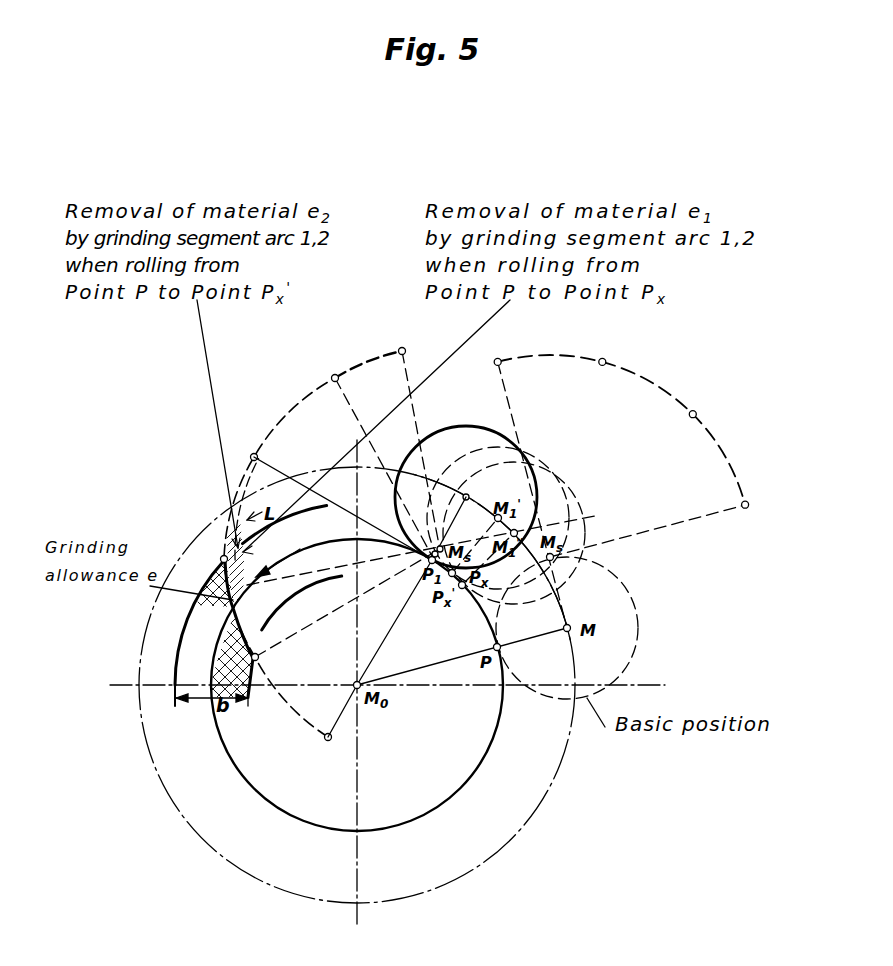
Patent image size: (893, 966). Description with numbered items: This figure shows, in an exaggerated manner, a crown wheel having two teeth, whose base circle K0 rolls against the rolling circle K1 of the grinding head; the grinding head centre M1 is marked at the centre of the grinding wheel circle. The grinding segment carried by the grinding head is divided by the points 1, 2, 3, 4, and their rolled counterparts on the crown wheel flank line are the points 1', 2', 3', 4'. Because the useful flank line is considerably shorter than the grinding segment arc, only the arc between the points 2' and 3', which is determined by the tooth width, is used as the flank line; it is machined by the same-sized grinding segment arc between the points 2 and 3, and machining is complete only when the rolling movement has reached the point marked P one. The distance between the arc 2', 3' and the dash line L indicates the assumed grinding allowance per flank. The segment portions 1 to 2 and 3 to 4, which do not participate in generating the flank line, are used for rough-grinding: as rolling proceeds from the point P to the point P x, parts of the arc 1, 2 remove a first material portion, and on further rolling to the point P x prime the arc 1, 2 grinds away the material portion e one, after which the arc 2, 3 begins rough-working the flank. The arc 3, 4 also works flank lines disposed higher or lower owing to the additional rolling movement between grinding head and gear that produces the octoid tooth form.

The grinding segment point 1 is at (495, 351).
The grinding segment point 2 is at (603, 351).
The grinding segment point 3 is at (697, 403).
The grinding segment point 4 is at (754, 505).
The flank line point 1' is at (338, 748).
The flank line point 2' is at (268, 664).
The flank line point 3' is at (214, 558).
The flank line point 4' is at (242, 455).
The base circle K0 is at (463, 787).
The rolling circle K1 is at (638, 648).
The center of grinding wheel M1 is at (466, 497).